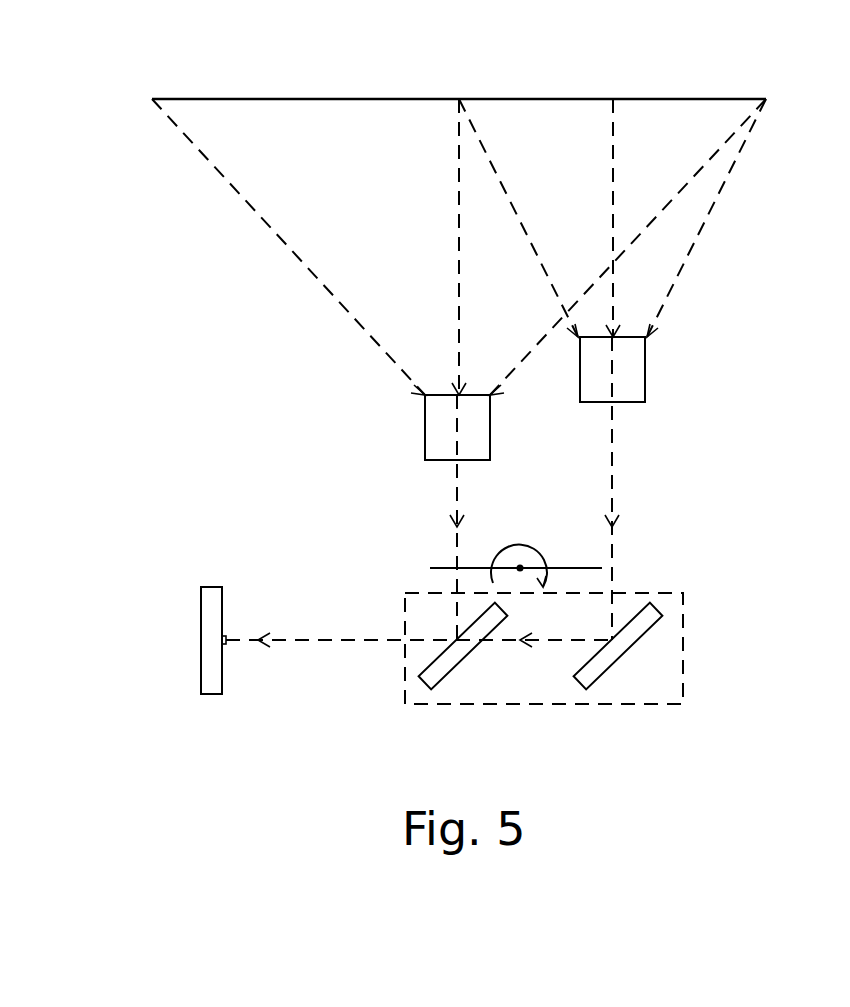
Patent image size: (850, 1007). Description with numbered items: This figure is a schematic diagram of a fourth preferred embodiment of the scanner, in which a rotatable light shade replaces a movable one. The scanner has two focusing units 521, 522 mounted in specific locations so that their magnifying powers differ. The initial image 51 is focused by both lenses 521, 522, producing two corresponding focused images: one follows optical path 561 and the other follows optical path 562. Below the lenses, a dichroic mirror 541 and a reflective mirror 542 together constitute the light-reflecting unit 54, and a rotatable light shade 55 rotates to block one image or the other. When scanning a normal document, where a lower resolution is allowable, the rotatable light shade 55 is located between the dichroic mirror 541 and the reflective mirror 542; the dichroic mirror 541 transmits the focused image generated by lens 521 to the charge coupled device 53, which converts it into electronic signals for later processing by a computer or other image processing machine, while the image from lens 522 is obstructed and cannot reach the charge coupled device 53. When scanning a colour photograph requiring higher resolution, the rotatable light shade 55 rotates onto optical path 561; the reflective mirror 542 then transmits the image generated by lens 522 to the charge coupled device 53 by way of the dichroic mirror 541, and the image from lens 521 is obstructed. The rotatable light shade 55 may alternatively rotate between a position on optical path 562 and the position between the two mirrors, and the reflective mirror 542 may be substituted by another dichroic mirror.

The initial image 51 is at (478, 98).
The focusing unit 521 is at (435, 422).
The focusing unit 522 is at (640, 372).
The charge coupled device 53 is at (205, 641).
The light-reflecting unit 54 is at (663, 650).
The dichroic mirror 541 is at (460, 648).
The reflective mirror 542 is at (615, 648).
The rotatable light shade 55 is at (567, 568).
The optical path 561 is at (457, 473).
The optical path 562 is at (613, 475).